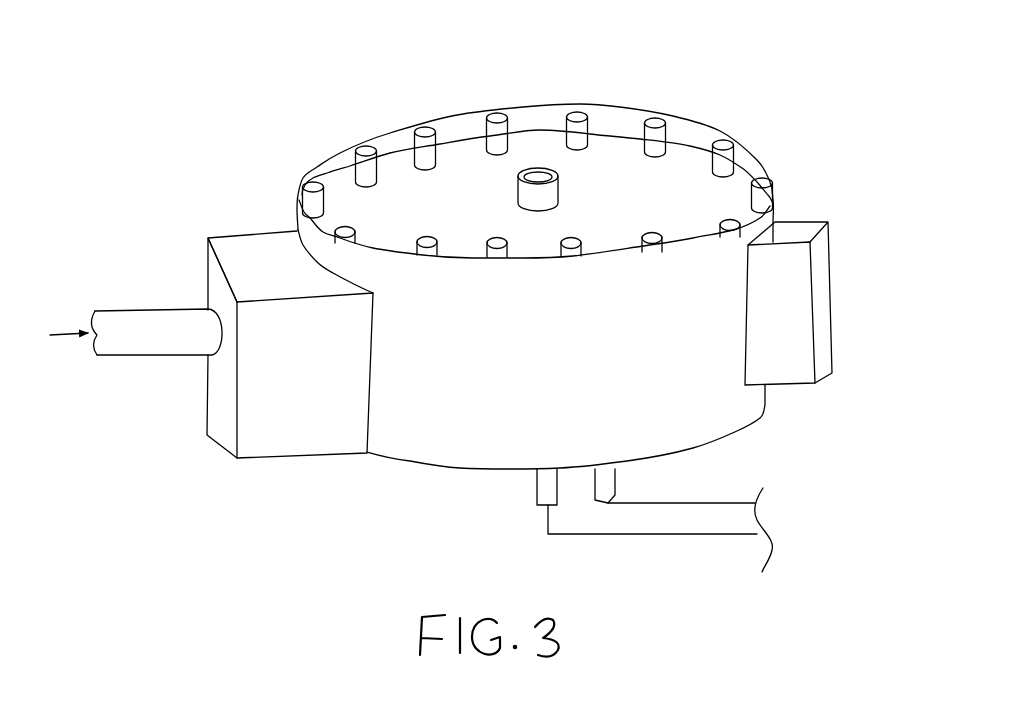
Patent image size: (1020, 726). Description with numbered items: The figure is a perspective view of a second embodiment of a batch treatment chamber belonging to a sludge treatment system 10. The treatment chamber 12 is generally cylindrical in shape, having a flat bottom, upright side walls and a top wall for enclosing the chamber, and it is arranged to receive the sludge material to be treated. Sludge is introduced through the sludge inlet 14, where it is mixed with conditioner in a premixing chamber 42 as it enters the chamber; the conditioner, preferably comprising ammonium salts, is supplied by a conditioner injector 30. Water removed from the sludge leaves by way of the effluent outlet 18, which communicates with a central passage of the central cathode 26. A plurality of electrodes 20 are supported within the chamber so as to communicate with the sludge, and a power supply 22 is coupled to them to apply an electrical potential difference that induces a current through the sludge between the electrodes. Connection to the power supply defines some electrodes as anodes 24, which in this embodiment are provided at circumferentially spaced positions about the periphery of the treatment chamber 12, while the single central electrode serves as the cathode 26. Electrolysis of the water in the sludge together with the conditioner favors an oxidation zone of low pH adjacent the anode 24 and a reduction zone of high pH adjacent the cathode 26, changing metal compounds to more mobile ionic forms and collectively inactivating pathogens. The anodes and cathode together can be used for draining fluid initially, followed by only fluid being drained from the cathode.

The sludge treatment system 10 is at (180, 155).
The treatment chamber 12 is at (462, 183).
The sludge inlet 14 is at (152, 340).
The effluent outlet 18 is at (695, 500).
The electrodes 20 is at (578, 118).
The power supply 22 is at (820, 272).
The anode 24 is at (728, 152).
The cathode 26 is at (560, 186).
The conditioner injector 30 is at (290, 467).
The premixing chamber 42 is at (220, 273).